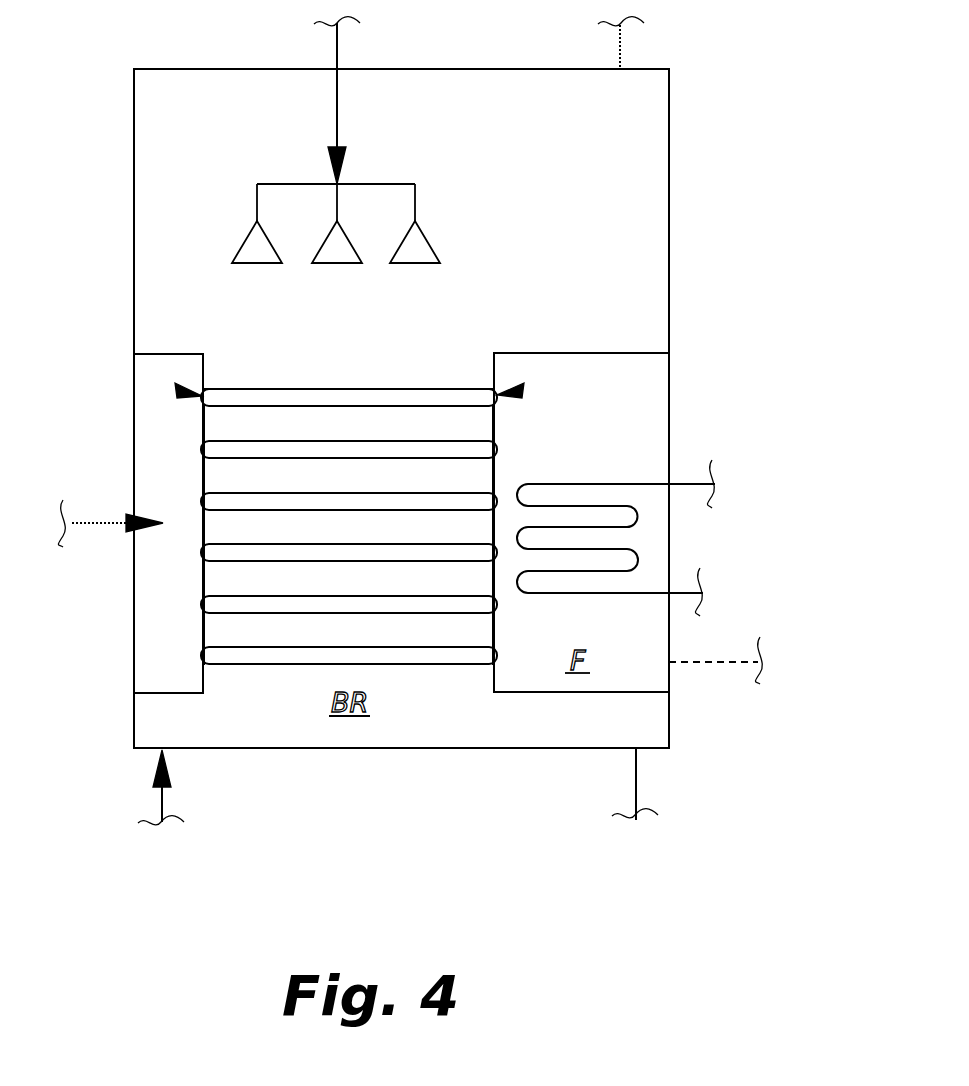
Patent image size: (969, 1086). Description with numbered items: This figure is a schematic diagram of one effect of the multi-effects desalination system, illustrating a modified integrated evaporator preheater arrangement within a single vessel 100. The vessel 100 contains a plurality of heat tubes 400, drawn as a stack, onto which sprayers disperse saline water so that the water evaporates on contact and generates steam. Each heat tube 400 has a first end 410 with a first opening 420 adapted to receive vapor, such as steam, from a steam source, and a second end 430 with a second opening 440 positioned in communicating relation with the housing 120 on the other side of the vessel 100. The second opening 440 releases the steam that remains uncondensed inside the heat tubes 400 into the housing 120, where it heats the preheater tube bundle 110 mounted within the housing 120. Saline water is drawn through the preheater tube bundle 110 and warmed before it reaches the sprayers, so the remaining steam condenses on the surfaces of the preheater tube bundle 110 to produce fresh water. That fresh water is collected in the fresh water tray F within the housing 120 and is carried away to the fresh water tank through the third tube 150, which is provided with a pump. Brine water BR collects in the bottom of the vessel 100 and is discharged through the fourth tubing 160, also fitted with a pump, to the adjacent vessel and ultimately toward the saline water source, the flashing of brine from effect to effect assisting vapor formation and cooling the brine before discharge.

The vessel 100 is at (325, 749).
The preheater tube bundle 110 is at (545, 483).
The housing 120 is at (551, 352).
The third tube 150 is at (715, 665).
The fourth tubing 160 is at (636, 786).
The heat tubes 400 is at (350, 388).
The first end 410 is at (205, 388).
The first opening 420 is at (182, 391).
The second end 430 is at (492, 388).
The second opening 440 is at (516, 391).